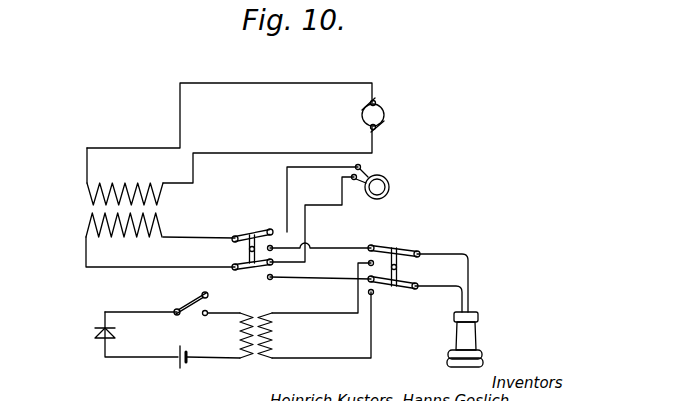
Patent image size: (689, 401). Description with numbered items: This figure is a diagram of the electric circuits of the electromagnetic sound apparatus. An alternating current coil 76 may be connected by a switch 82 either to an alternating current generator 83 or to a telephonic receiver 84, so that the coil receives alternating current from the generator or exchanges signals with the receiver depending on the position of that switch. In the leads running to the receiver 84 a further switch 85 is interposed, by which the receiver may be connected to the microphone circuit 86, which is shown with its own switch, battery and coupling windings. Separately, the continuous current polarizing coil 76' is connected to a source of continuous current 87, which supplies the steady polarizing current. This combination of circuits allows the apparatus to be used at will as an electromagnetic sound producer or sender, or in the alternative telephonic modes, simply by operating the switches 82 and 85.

The alternating current coil 76 is at (136, 226).
The polarizing coil 76' is at (138, 196).
The switch 82 is at (252, 248).
The alternating current generator 83 is at (384, 183).
The telephonic receiver 84 is at (476, 339).
The switch 85 is at (394, 264).
The microphone circuit 86 is at (191, 314).
The source of continuous current 87 is at (386, 115).